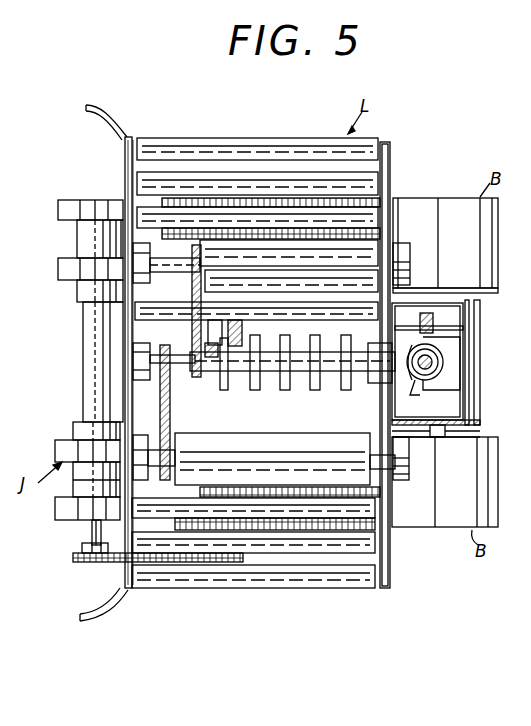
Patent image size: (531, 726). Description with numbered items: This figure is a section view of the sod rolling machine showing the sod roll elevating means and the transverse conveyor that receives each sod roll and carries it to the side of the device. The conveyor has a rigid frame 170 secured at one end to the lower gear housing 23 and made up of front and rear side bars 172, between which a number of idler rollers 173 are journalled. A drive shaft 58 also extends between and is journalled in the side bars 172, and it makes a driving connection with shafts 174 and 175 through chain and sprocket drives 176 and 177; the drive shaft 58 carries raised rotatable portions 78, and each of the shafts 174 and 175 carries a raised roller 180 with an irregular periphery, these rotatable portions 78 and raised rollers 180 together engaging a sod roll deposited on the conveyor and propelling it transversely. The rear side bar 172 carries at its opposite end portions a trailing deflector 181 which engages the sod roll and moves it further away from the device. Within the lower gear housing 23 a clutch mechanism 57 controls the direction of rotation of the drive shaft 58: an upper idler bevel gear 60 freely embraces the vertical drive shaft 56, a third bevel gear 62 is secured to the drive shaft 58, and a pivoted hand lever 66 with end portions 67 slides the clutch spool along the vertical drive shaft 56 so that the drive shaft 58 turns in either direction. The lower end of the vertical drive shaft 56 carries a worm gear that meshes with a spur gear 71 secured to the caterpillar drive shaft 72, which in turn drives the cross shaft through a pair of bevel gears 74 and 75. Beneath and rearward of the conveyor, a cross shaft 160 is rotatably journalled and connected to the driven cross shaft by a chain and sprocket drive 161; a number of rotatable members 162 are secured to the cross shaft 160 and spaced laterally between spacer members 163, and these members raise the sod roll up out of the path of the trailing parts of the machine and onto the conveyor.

The lower gear housing 23 is at (436, 360).
The vertical drive shaft 56 is at (436, 366).
The clutch mechanism 57 is at (438, 352).
The drive shaft 58 is at (185, 370).
The upper idler bevel gear 60 is at (448, 328).
The third bevel gear 62 is at (420, 385).
The pivoted hand lever 66 is at (462, 432).
The end portions 67 is at (455, 395).
The spur gear 71 is at (428, 318).
The caterpillar drive shaft 72 is at (452, 310).
The bevel gear 74 is at (237, 348).
The bevel gear 75 is at (203, 342).
The discs 78 is at (346, 390).
The cross shaft 160 is at (88, 534).
The chain and sprocket drive 161 is at (108, 563).
The rotatable members 162 is at (64, 200).
The spacer members 163 is at (80, 232).
The rigid frame 170 is at (396, 149).
The side bars 172 is at (127, 372).
The idler rollers 173 is at (220, 218).
The shaft 174 is at (400, 498).
The shaft 175 is at (155, 272).
The chain and sprocket drive 176 is at (130, 325).
The chain and sprocket drive 177 is at (157, 393).
The raised roller 180 is at (366, 256).
The trailing deflector 181 is at (110, 83).